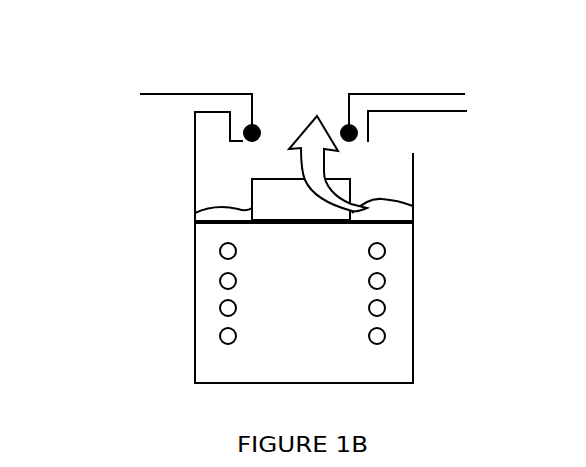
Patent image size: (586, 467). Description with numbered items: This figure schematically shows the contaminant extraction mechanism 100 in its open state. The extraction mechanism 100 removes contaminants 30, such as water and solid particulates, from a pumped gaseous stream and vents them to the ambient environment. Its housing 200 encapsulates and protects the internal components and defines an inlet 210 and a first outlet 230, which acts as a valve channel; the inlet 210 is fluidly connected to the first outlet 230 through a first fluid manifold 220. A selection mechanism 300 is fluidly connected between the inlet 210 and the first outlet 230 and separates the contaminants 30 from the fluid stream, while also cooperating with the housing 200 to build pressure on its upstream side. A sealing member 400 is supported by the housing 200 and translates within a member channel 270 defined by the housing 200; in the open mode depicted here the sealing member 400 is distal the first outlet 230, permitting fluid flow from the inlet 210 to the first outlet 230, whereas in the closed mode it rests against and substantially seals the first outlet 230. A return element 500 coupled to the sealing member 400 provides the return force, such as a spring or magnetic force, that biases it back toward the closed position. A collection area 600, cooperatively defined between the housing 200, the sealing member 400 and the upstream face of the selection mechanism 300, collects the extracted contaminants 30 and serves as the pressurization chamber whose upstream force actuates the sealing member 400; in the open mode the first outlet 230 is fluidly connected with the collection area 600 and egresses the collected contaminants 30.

The contaminant extraction mechanism 100 is at (200, 69).
The housing 200 is at (159, 116).
The inlet 210 is at (421, 129).
The first fluid manifold 220 is at (362, 151).
The first outlet 230 is at (284, 113).
The member channel 270 is at (416, 279).
The contaminants 30 is at (191, 211).
The selection mechanism 300 is at (204, 231).
The sealing member 400 is at (231, 179).
The return element 500 is at (211, 284).
The collection area 600 is at (419, 211).